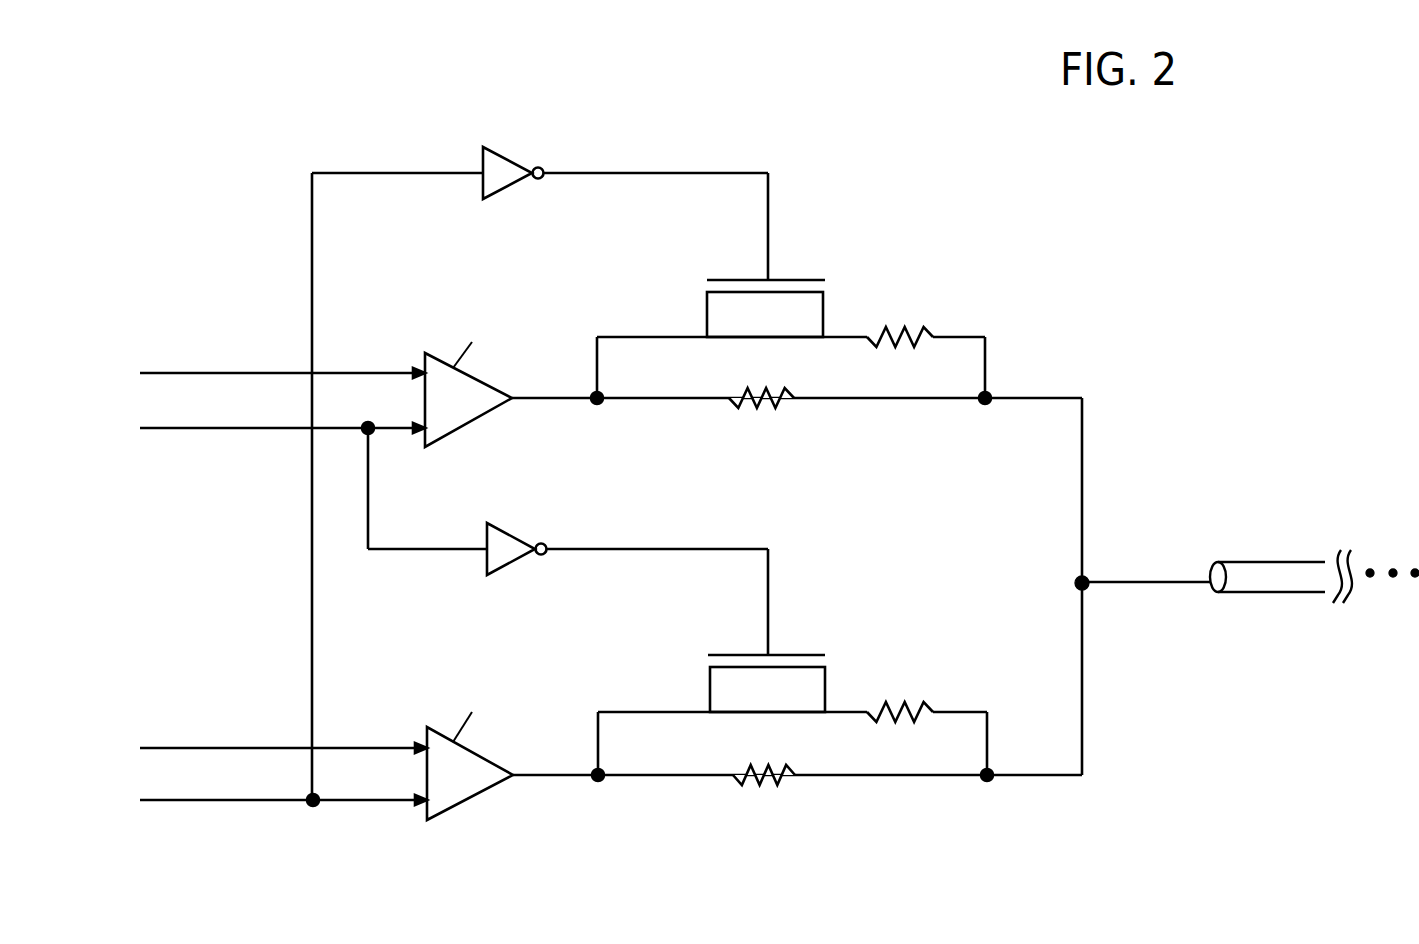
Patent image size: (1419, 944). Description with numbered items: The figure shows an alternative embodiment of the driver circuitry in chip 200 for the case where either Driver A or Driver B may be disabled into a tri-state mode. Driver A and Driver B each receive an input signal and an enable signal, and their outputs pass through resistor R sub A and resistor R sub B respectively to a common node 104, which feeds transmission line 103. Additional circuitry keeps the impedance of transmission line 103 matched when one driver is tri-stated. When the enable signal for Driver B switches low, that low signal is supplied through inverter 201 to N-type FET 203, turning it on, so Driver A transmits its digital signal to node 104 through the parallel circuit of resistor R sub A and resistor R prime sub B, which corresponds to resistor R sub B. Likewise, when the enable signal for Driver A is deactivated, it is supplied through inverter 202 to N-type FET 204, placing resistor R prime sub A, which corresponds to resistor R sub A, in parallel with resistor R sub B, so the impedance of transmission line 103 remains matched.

The chip 200 is at (1061, 340).
The inverter 201 is at (497, 150).
The inverter 202 is at (502, 532).
The N-type FET 203 is at (825, 307).
The N-type FET 204 is at (826, 688).
The node 104 is at (1092, 578).
The transmission line 103 is at (1270, 590).